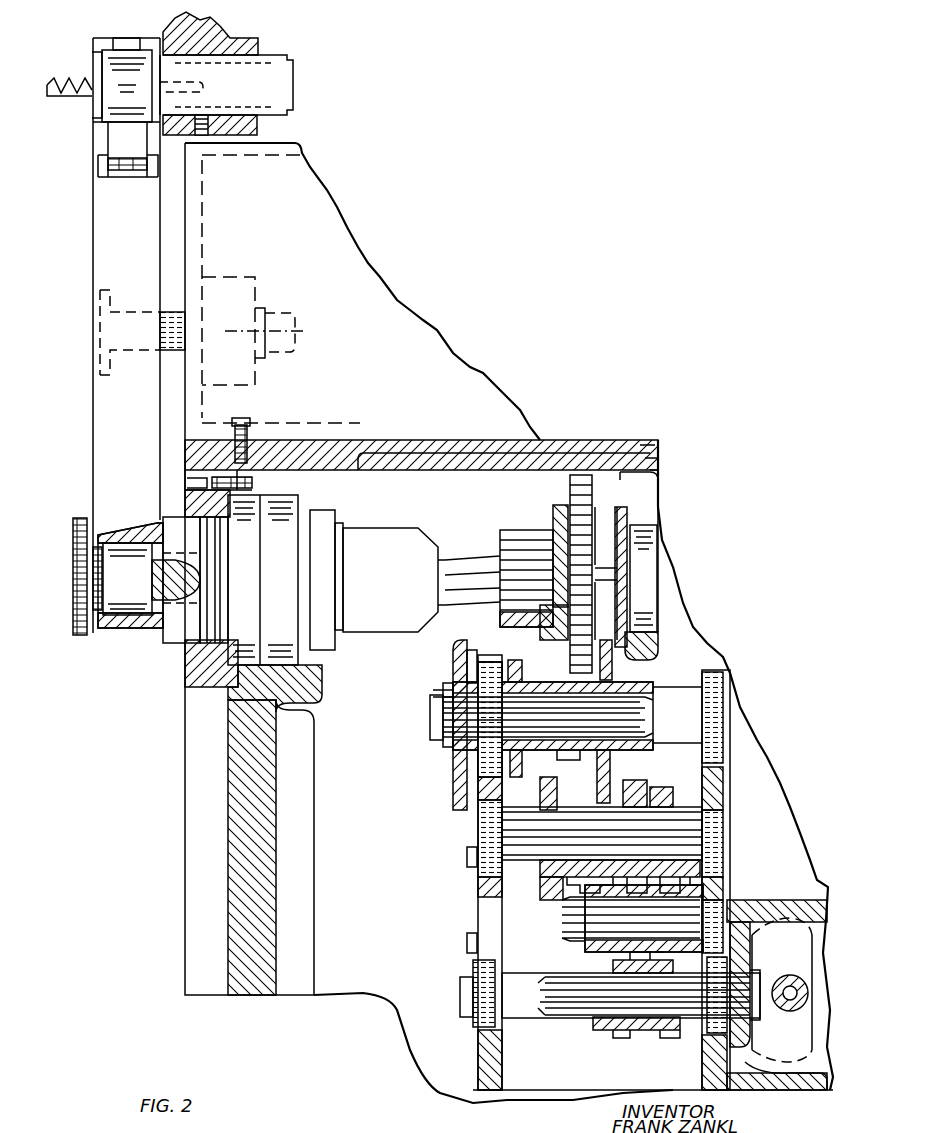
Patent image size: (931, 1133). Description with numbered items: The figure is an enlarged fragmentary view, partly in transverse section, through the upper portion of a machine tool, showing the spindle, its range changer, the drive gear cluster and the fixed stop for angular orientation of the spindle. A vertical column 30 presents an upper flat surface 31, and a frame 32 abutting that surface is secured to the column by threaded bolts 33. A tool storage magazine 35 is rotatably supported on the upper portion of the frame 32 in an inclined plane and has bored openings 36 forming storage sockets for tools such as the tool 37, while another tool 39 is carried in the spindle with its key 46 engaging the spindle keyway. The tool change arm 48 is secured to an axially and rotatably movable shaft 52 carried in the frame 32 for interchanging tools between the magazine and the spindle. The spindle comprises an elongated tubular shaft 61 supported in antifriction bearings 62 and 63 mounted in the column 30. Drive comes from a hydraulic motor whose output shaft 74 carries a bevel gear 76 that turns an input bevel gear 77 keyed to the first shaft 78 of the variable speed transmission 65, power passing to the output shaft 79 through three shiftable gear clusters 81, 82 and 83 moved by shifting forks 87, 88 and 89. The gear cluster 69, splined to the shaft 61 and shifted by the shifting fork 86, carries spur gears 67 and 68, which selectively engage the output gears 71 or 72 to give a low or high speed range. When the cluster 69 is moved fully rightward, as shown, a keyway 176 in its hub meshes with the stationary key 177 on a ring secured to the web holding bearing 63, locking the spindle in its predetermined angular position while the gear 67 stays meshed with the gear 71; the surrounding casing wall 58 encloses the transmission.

The vertical column 30 is at (185, 950).
The upper flat surface 31 is at (503, 440).
The frame 32 is at (354, 248).
The threaded bolts 33 is at (246, 418).
The tool storage magazine 35 is at (215, 25).
The bored openings 36 is at (268, 60).
The tool 37 is at (70, 92).
The tool 39 is at (88, 628).
The key 46 is at (165, 85).
The tool change arm 48 is at (95, 214).
The shaft 52 is at (165, 345).
The casing wall 58 is at (810, 860).
The tubular shaft 61 is at (358, 532).
The antifriction bearing 62 is at (323, 643).
The antifriction bearing 63 is at (648, 563).
The variable speed transmission 65 is at (400, 1030).
The spur gear 67 is at (580, 480).
The spur gear 68 is at (510, 535).
The gear cluster 69 is at (547, 492).
The output gear 71 is at (563, 681).
The output gear 72 is at (453, 812).
The output shaft 74 is at (807, 1003).
The bevel gear 76 is at (782, 923).
The input bevel gear 77 is at (740, 957).
The first shaft 78 is at (520, 1000).
The output shaft 79 is at (432, 718).
The gear cluster 81 is at (620, 1043).
The gear cluster 82 is at (662, 795).
The gear cluster 83 is at (540, 880).
The shifting fork 86 is at (583, 470).
The shifting fork 87 is at (620, 805).
The shifting fork 88 is at (575, 805).
The shifting fork 89 is at (597, 1027).
The keyway 176 is at (606, 650).
The key 177 is at (632, 530).